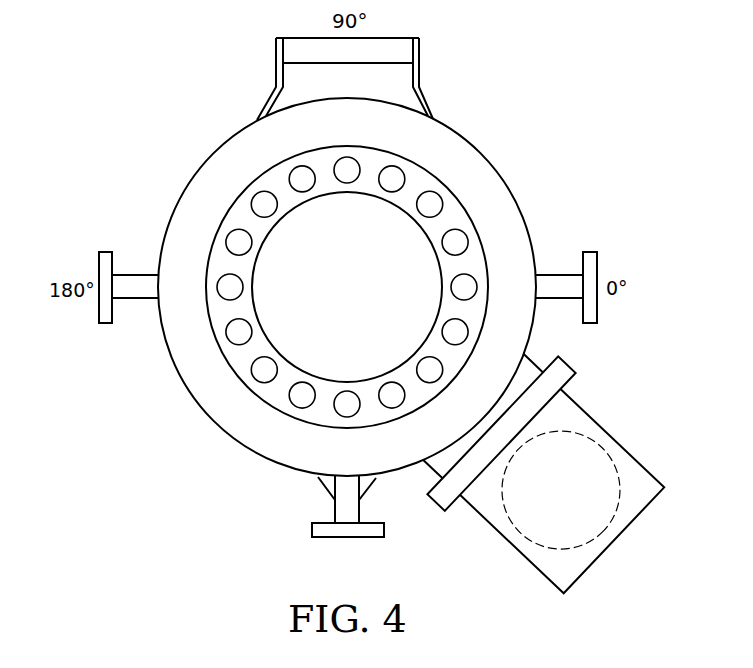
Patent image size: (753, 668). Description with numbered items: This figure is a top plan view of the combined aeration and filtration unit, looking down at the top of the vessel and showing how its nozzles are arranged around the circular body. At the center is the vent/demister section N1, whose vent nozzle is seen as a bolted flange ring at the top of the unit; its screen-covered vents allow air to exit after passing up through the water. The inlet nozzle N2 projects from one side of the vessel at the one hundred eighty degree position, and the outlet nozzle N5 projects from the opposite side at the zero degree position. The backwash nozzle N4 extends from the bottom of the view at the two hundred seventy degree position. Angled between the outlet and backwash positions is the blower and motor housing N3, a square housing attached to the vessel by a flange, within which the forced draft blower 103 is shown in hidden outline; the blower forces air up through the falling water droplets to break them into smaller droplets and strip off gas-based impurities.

The vent/demister section N1 is at (437, 173).
The inlet nozzle N2 is at (97, 262).
The blower and motor housing N3 is at (620, 540).
The backwash nozzle N4 is at (346, 540).
The outlet nozzle N5 is at (598, 262).
The forced draft blower 103 is at (613, 437).